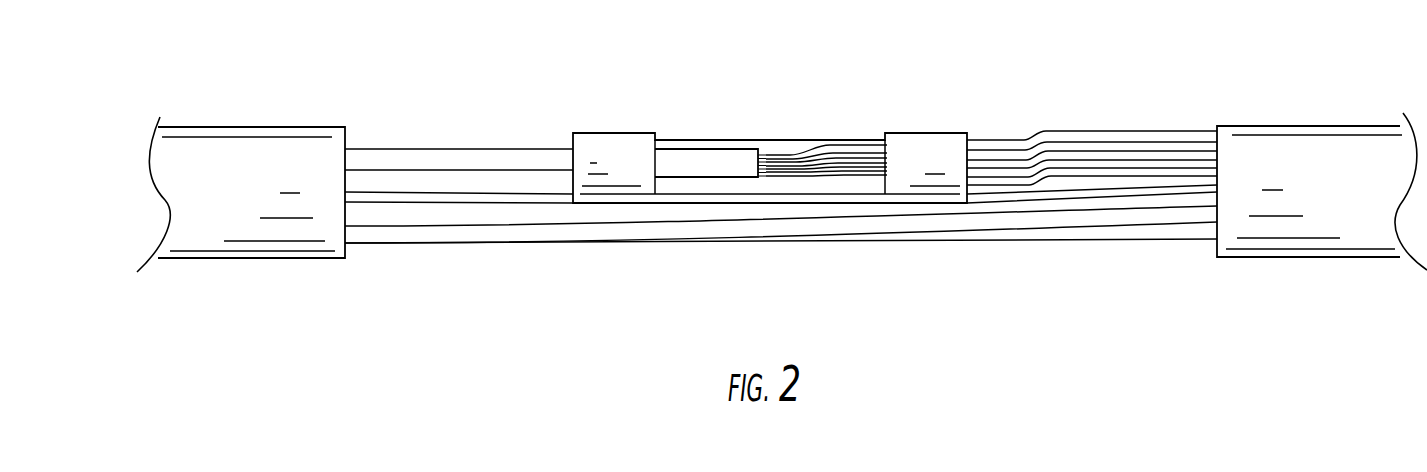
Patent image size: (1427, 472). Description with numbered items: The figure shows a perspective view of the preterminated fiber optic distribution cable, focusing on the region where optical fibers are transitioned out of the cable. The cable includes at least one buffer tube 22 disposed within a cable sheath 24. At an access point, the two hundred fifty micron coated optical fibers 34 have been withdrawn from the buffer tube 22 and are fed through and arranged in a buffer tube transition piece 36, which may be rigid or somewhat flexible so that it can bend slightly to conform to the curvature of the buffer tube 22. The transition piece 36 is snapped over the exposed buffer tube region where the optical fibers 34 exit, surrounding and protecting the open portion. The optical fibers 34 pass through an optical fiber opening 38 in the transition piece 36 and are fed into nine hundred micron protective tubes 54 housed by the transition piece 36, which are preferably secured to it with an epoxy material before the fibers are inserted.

The buffer tube 22 is at (462, 175).
The cable sheath 24 is at (257, 127).
The optical fibers 34 is at (858, 152).
The buffer tube transition piece 36 is at (705, 158).
The optical fiber opening 38 is at (781, 152).
The protective tubes 54 is at (1093, 145).